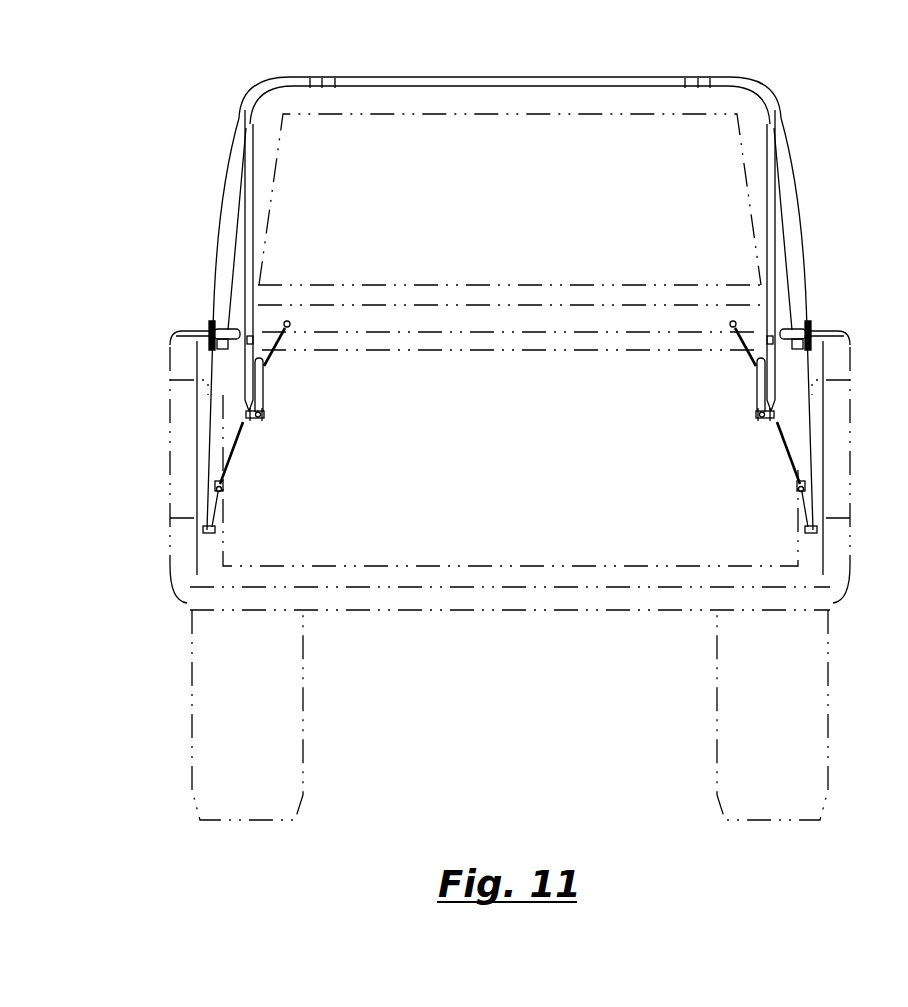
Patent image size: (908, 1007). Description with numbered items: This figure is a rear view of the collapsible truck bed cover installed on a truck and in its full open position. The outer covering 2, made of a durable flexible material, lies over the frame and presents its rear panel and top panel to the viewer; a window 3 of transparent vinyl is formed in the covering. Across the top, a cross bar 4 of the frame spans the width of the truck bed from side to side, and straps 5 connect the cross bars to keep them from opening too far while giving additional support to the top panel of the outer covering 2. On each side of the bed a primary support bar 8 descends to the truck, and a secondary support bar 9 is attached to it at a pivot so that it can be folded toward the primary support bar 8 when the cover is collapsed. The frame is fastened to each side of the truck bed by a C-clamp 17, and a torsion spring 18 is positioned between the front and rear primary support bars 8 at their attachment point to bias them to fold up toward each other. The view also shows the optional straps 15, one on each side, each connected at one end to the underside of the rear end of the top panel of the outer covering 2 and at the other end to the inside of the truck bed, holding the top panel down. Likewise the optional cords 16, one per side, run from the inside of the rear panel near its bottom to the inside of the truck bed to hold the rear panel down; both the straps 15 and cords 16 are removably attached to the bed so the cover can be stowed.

The outer covering 2 is at (567, 104).
The window 3 is at (519, 198).
The cross bar 4 is at (492, 80).
The strap 5 is at (321, 78).
The primary support bar 8 is at (249, 197).
The secondary support bar 9 is at (264, 380).
The strap 15 is at (232, 259).
The cord 16 is at (229, 460).
The C-clamp 17 is at (216, 323).
The torsion spring 18 is at (256, 423).